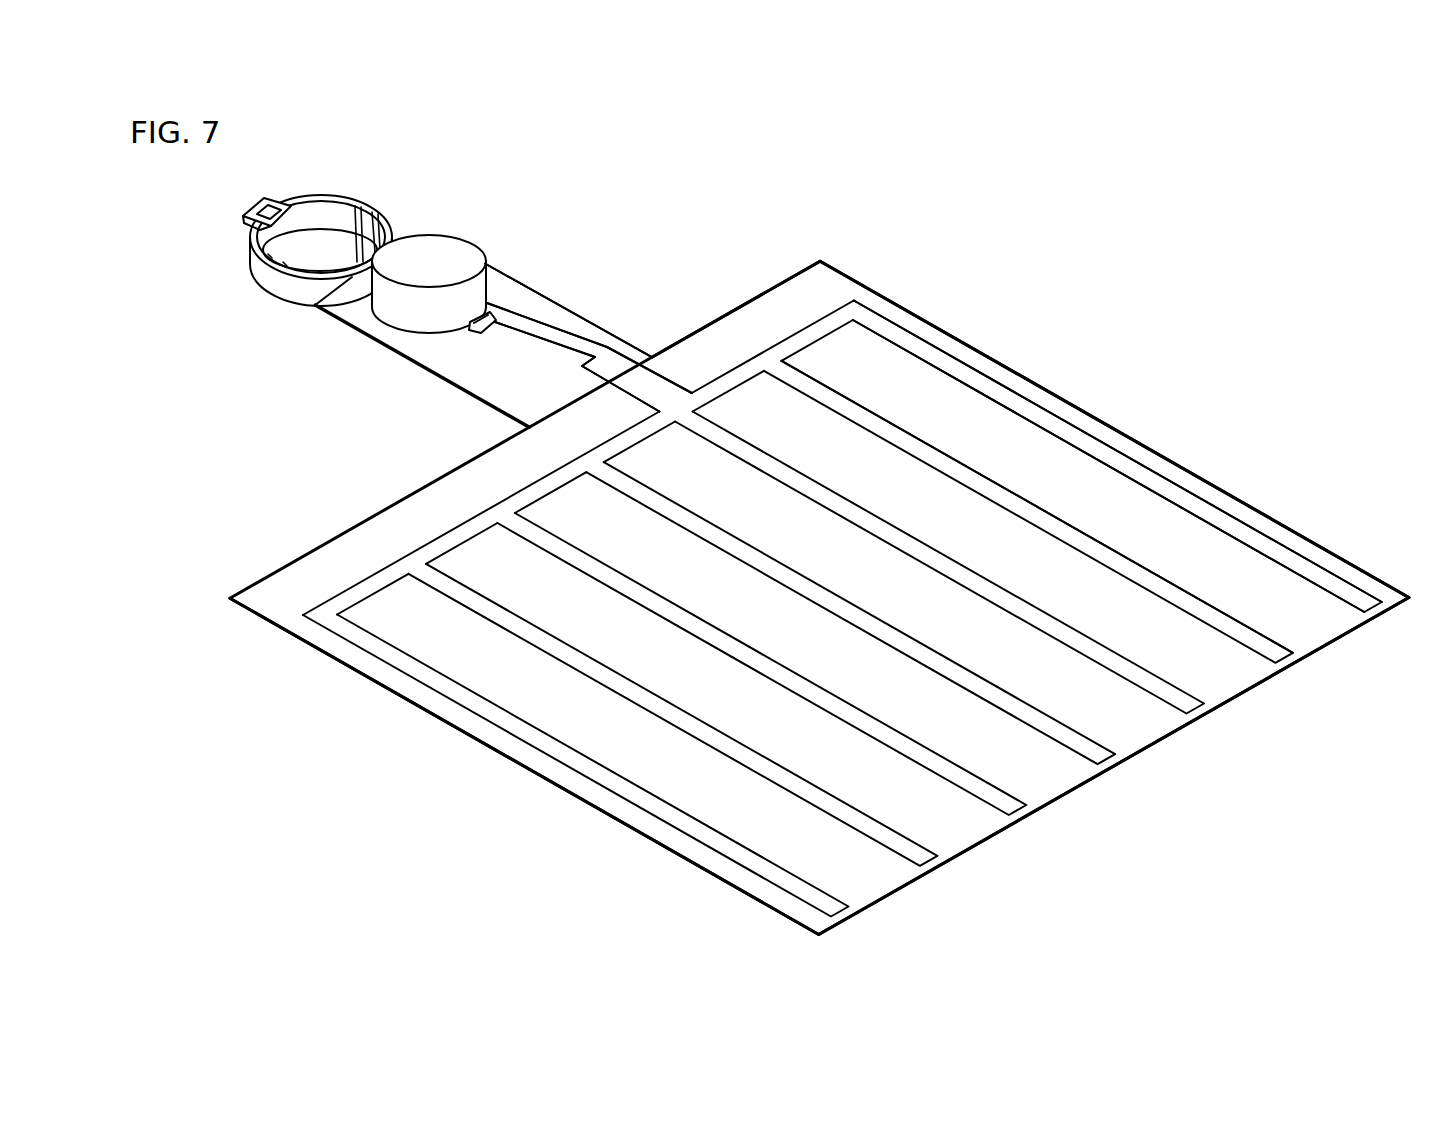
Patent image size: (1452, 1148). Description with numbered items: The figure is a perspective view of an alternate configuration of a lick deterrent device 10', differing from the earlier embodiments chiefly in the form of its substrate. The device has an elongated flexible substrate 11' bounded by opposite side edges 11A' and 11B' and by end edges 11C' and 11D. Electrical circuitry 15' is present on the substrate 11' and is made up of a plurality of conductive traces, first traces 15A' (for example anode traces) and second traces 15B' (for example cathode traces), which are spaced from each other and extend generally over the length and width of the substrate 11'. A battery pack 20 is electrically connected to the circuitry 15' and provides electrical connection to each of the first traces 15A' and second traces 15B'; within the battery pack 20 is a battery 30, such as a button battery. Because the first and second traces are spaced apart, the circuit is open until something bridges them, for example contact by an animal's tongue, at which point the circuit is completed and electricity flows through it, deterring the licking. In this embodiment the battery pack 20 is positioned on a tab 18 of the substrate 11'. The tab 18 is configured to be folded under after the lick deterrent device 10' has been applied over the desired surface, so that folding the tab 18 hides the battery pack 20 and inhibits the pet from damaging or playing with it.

The lick deterrent device 10' is at (827, 156).
The elongated flexible substrate 11' is at (819, 565).
The side edge 11A' is at (1114, 429).
The side edge 11B' is at (524, 766).
The end edge 11C' is at (736, 309).
The end edge 11D is at (1053, 803).
The electrical circuitry 15' is at (842, 598).
The first traces 15A' is at (1118, 452).
The second traces 15B' is at (1073, 486).
The tab 18 is at (563, 310).
The battery pack 20 is at (410, 237).
The battery 30 is at (473, 254).